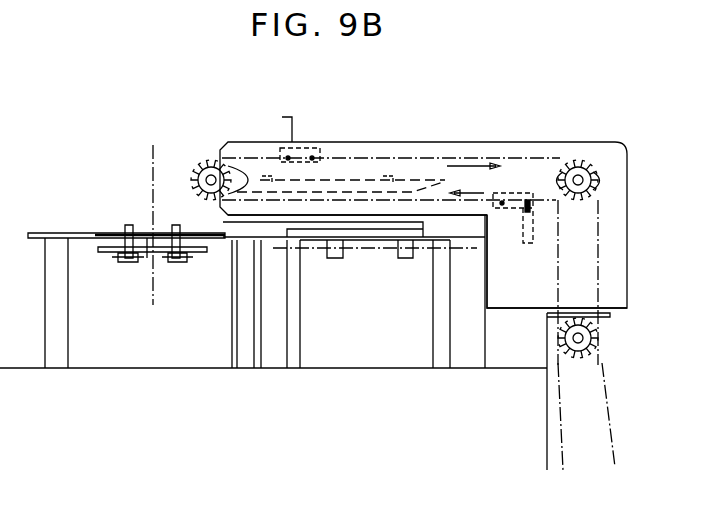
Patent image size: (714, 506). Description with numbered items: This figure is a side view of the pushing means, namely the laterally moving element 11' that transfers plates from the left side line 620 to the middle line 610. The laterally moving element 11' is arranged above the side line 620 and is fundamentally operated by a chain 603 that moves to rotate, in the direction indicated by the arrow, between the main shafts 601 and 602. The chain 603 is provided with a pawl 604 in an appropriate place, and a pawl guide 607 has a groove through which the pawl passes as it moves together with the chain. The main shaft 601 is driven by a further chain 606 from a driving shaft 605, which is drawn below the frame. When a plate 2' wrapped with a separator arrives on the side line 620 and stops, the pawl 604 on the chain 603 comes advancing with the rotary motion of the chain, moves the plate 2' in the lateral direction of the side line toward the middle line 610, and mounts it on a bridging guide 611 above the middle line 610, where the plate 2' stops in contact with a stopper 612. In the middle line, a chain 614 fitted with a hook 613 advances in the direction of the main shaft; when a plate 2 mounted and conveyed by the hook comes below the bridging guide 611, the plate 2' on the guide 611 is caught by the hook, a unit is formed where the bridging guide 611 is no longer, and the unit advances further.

The main shaft 601 is at (598, 167).
The main shaft 602 is at (200, 162).
The chain 603 is at (510, 160).
The pawl 604 is at (527, 243).
The driving shaft 605 is at (600, 347).
The chain 606 is at (600, 262).
The pawl guide 607 is at (347, 180).
The middle line 610 is at (144, 280).
The bridging guide 611 is at (147, 245).
The stopper 612 is at (52, 233).
The hook 613 is at (129, 225).
The chain 614 is at (118, 260).
The left side line 620 is at (372, 268).
The plate 2 is at (155, 277).
The plate wrapped with separator 2' is at (148, 214).
The laterally moving element 11' is at (433, 104).